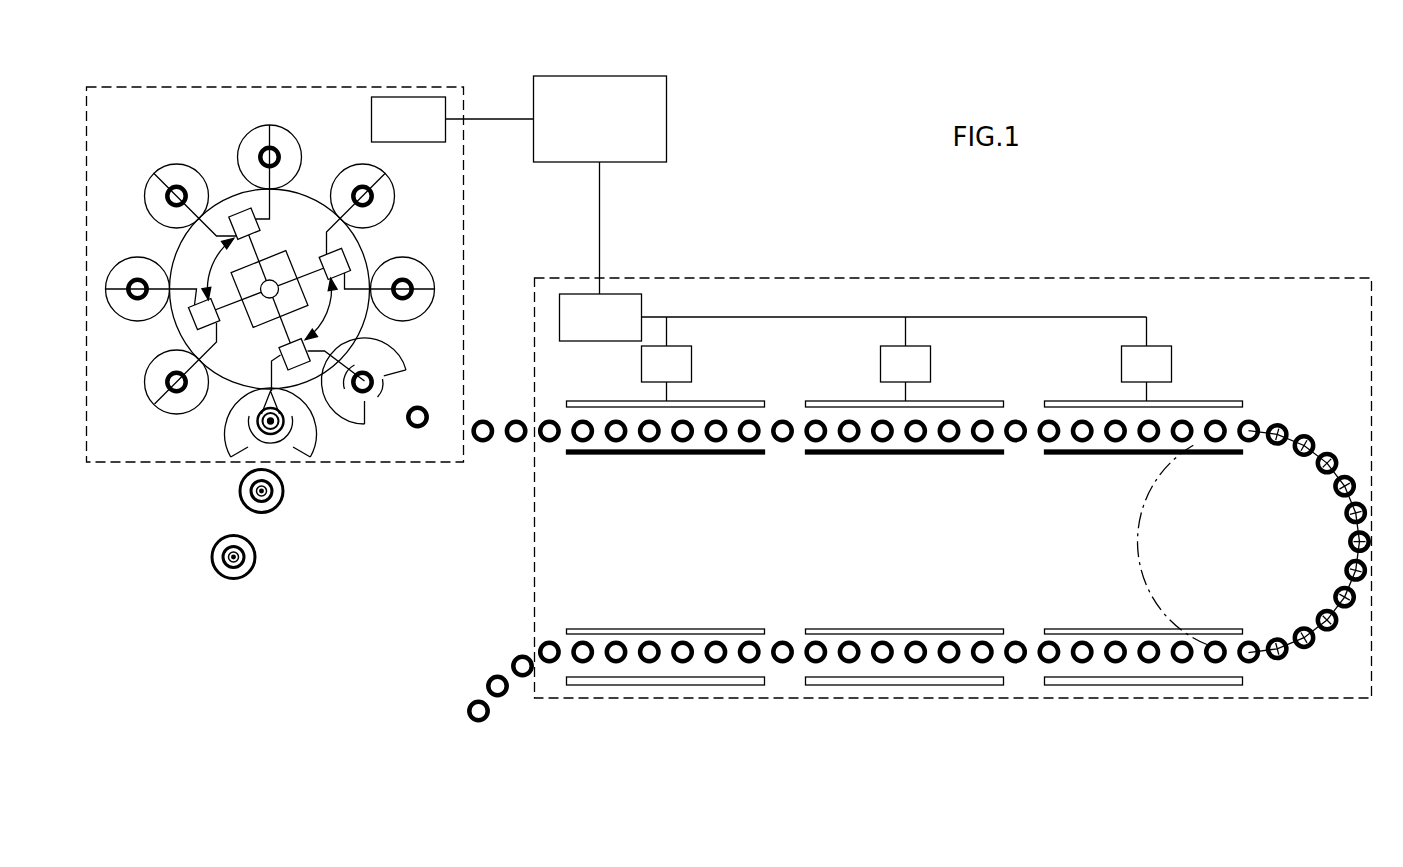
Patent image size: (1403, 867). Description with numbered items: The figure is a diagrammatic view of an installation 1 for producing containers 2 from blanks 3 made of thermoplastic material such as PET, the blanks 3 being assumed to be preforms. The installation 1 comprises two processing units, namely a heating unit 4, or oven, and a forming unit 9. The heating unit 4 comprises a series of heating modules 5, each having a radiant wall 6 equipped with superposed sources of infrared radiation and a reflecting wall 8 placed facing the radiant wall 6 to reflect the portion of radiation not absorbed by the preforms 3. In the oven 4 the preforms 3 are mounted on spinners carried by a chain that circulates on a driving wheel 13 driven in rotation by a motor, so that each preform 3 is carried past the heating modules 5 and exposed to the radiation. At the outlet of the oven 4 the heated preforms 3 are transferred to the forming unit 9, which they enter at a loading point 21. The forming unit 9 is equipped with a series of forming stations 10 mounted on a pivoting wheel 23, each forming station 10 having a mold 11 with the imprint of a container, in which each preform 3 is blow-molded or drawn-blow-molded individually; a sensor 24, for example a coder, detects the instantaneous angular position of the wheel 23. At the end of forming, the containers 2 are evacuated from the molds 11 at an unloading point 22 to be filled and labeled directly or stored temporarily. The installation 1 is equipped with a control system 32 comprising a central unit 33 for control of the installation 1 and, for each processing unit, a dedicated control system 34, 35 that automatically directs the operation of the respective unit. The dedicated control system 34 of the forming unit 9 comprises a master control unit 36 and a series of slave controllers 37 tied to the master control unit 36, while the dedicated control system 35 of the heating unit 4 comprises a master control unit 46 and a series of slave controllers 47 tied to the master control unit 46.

The installation 1 is at (760, 84).
The container 2 is at (270, 513).
The blank 3 is at (426, 411).
The heating unit 4 is at (1226, 278).
The heating module 5 is at (960, 401).
The radiant wall 6 is at (840, 403).
The reflecting wall 8 is at (898, 455).
The forming unit 9 is at (148, 88).
The forming station 10 is at (245, 137).
The mold 11 is at (407, 310).
The driving wheel 13 is at (1138, 531).
The loading point 21 is at (378, 398).
The unloading point 22 is at (263, 443).
The pivoting wheel 23 is at (173, 328).
The sensor 24 is at (316, 209).
The control system 32 is at (541, 77).
The central unit 33 is at (586, 138).
The dedicated control system 34 is at (418, 97).
The dedicated control system 35 is at (628, 294).
The master control unit 36 is at (396, 138).
The slave controller 37 is at (270, 264).
The master control unit 46 is at (587, 336).
The slave controller 47 is at (654, 380).